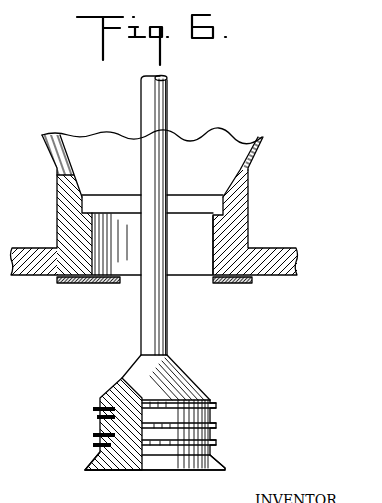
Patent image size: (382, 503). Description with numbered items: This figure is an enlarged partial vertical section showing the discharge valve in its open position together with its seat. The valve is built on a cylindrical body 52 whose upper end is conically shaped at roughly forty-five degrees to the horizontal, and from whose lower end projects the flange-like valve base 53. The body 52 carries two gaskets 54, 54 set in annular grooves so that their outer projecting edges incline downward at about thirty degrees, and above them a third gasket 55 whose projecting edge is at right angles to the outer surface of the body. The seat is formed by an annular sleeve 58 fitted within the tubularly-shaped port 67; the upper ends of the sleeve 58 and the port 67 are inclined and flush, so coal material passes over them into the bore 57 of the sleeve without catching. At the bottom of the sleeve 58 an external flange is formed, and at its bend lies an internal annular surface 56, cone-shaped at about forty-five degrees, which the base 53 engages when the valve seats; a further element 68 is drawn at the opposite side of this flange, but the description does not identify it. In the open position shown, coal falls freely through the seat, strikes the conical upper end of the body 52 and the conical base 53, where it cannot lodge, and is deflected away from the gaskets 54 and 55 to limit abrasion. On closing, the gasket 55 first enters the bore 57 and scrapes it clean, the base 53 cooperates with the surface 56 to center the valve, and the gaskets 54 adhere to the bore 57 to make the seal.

The cylindrical body 52 is at (162, 388).
The valve base 53 is at (216, 459).
The gaskets 54 is at (213, 444).
The third gasket 55 is at (215, 407).
The internal annular surface 56 is at (95, 281).
The bore 57 is at (216, 242).
The annular sleeve 58 is at (218, 194).
The tubularly-shaped port 67 is at (243, 217).
The right sealing strip 68 is at (238, 284).